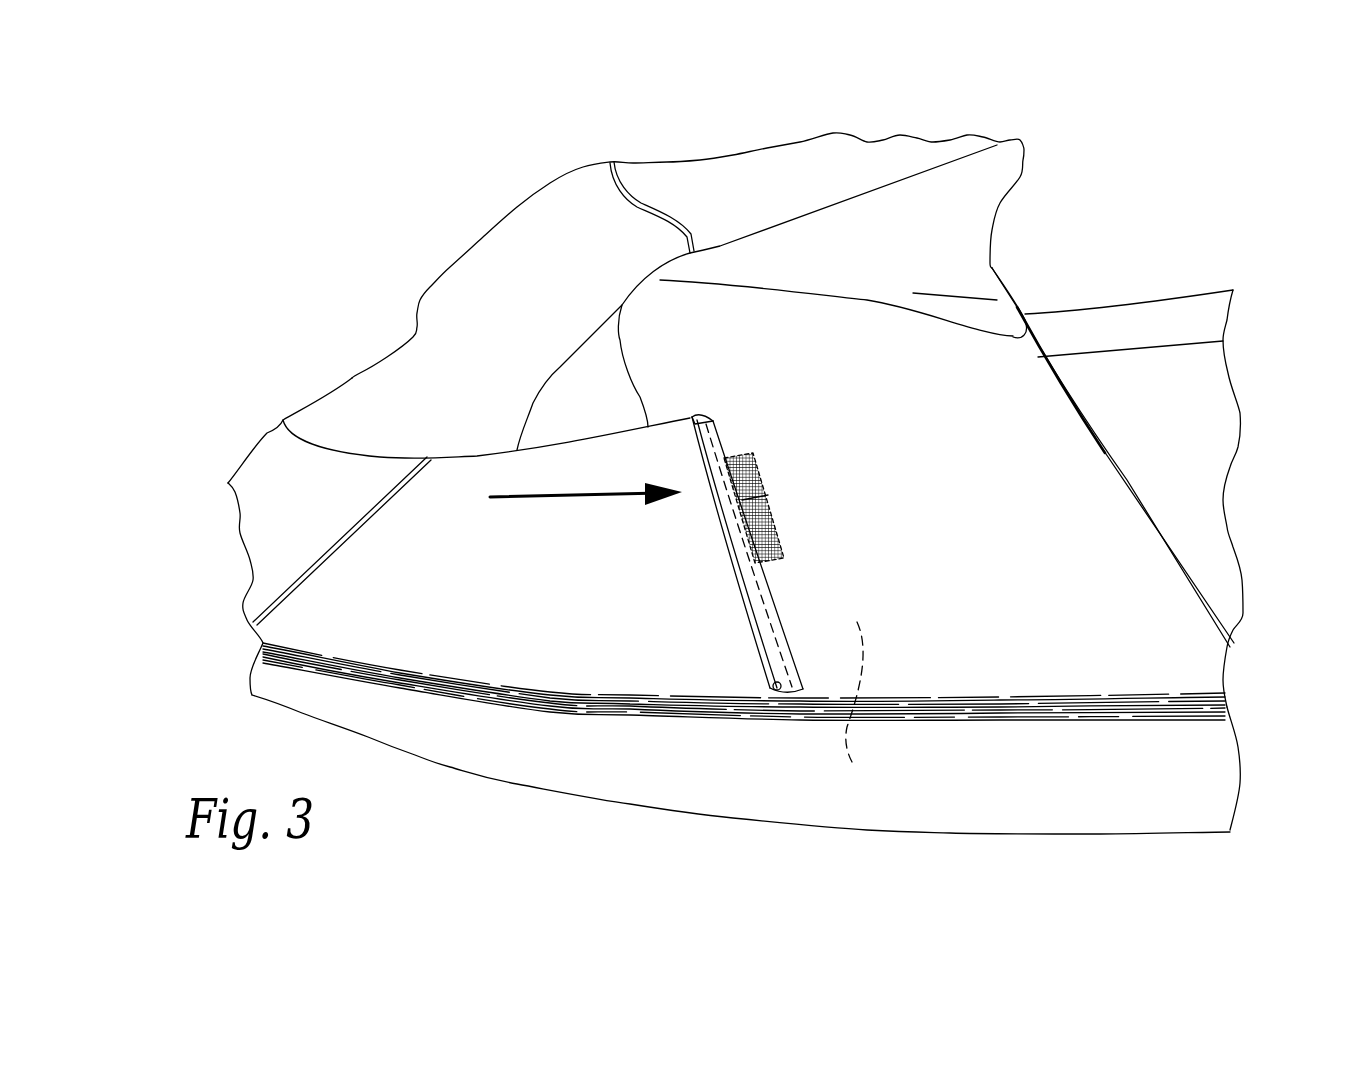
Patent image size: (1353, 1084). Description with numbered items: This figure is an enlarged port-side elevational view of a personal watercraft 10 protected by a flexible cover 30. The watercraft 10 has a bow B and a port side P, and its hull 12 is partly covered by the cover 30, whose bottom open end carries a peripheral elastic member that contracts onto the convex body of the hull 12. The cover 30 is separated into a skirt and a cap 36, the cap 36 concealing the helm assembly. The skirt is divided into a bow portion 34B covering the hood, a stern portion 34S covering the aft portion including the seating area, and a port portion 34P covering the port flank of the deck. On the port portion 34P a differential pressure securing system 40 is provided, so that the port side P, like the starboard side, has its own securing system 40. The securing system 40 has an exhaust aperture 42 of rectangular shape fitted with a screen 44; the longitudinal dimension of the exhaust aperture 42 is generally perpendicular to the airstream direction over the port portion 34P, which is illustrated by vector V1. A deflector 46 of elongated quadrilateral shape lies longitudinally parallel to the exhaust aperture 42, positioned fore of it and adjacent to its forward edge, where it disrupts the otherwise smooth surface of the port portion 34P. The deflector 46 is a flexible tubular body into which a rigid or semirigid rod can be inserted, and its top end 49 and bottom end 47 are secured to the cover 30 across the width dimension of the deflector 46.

The personal watercraft 10 is at (1276, 823).
The hull 12 is at (1192, 740).
The cover 30 is at (1205, 472).
The stern portion 34S is at (1192, 367).
The bow portion 34B is at (272, 527).
The port portion 34P is at (861, 707).
The cap 36 is at (893, 163).
The differential pressure securing system 40 is at (709, 365).
The exhaust aperture 42 is at (740, 457).
The screen 44 is at (760, 527).
The deflector 46 is at (747, 593).
The bottom end 47 is at (763, 695).
The top end 49 is at (696, 417).
The bow B is at (180, 450).
The vector V1 is at (520, 500).
The port P is at (1038, 700).